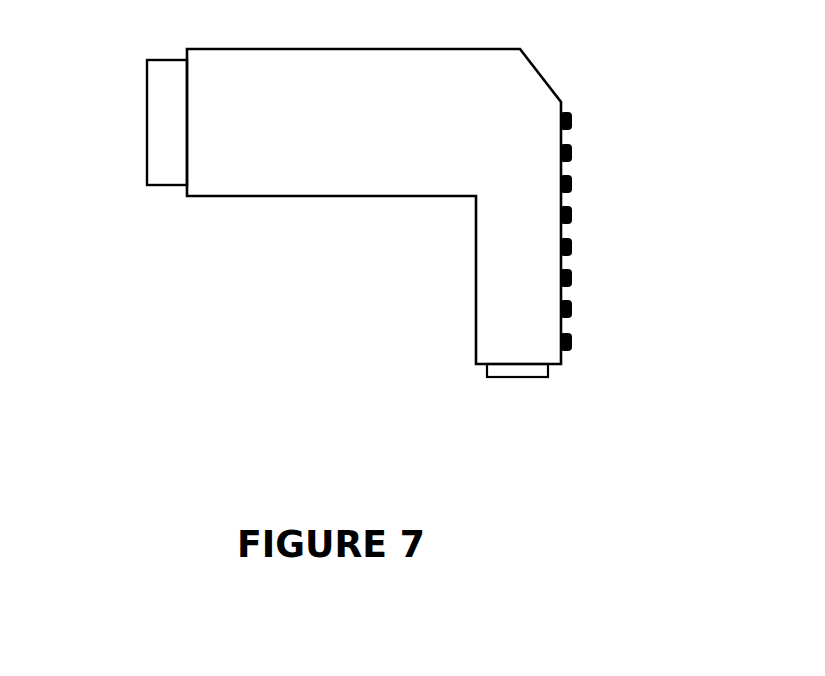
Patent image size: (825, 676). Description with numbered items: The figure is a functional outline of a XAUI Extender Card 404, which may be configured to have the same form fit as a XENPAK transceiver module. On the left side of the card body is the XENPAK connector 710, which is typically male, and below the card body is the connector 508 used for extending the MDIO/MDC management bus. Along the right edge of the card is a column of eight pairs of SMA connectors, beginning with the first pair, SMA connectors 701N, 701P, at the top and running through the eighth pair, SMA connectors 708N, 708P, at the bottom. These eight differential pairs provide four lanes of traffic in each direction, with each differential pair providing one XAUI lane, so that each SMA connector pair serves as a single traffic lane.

The XAUI Extender Card 404 is at (346, 166).
The XENPAK connector 710 is at (147, 80).
The connector 508 is at (520, 377).
The SMA connector 701N is at (681, 156).
The SMA connector 701P is at (675, 205).
The SMA connector 708N is at (681, 312).
The SMA connector 708P is at (675, 262).